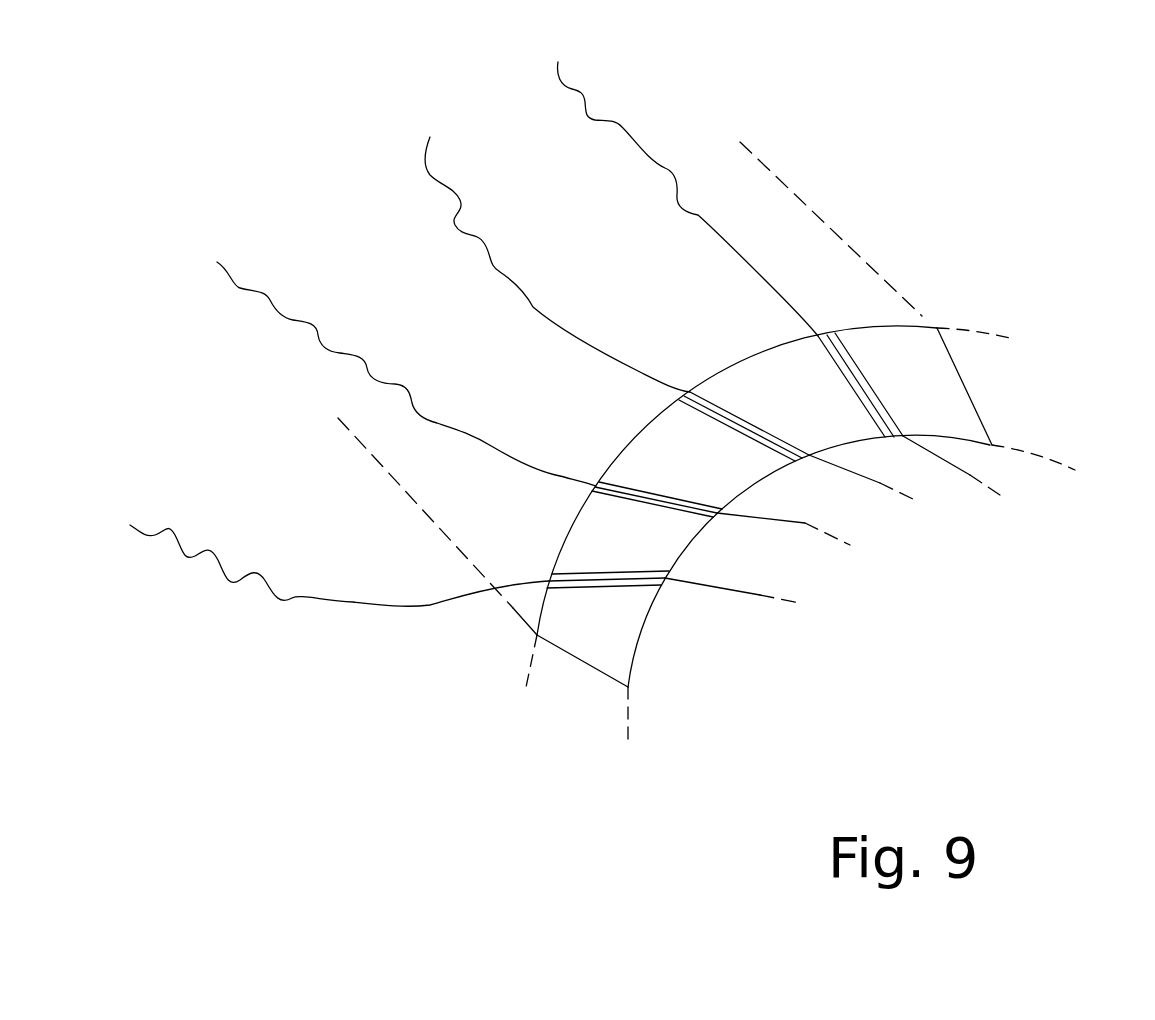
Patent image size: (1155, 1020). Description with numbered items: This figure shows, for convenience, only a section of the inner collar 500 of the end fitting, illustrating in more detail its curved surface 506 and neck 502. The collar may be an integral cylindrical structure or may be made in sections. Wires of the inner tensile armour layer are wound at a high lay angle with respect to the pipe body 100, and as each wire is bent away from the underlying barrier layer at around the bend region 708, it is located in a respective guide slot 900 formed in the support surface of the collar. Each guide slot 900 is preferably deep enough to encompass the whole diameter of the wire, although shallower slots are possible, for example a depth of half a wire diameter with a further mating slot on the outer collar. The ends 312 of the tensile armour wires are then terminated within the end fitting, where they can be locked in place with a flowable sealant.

The pipe body 100 is at (946, 656).
The ends of the tensile armour layers 312 is at (583, 92).
The inner collar 500 is at (921, 195).
The neck 502 is at (661, 319).
The curved surface 506 is at (937, 397).
The bend region 708 is at (1049, 465).
The guide slot 900 is at (632, 590).